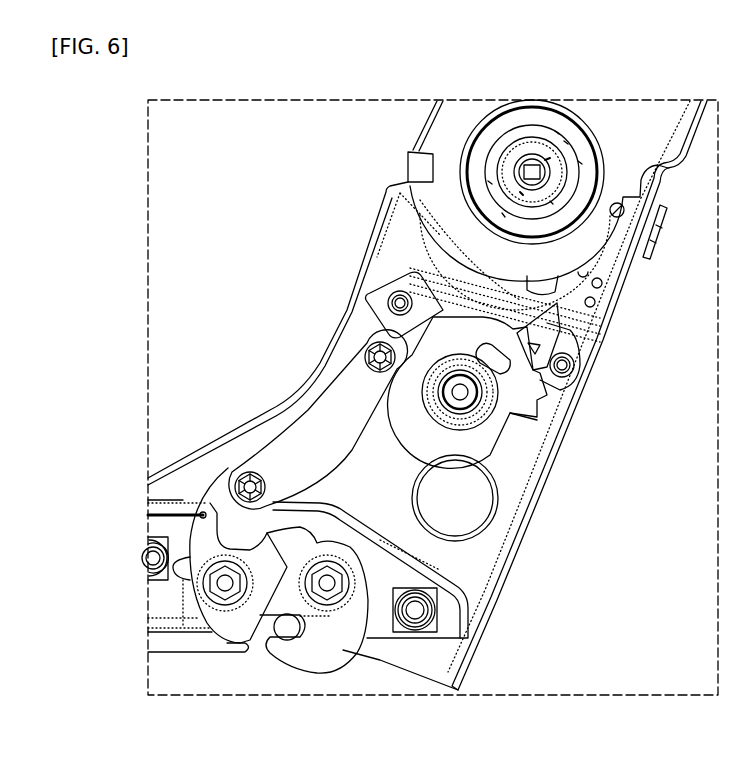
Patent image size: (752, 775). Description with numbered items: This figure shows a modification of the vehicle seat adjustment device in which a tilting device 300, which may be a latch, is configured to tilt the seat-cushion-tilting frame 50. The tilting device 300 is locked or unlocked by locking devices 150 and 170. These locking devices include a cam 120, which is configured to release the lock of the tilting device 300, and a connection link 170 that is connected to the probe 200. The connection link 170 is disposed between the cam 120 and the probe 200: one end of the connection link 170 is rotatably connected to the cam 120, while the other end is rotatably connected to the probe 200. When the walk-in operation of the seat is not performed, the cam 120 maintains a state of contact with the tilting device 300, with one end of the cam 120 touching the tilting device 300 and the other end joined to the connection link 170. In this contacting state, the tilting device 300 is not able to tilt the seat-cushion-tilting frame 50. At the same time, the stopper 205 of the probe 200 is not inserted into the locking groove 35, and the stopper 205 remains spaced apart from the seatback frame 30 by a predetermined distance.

The seatback frame 30 is at (450, 165).
The locking groove 35 is at (602, 284).
The seat-cushion-tilting frame 50 is at (245, 420).
The cam 120 is at (180, 507).
The locking device 150 is at (147, 518).
The connection link 170 is at (330, 398).
The probe 200 is at (510, 432).
The stopper 205 is at (547, 323).
The tilting device 300 is at (330, 648).